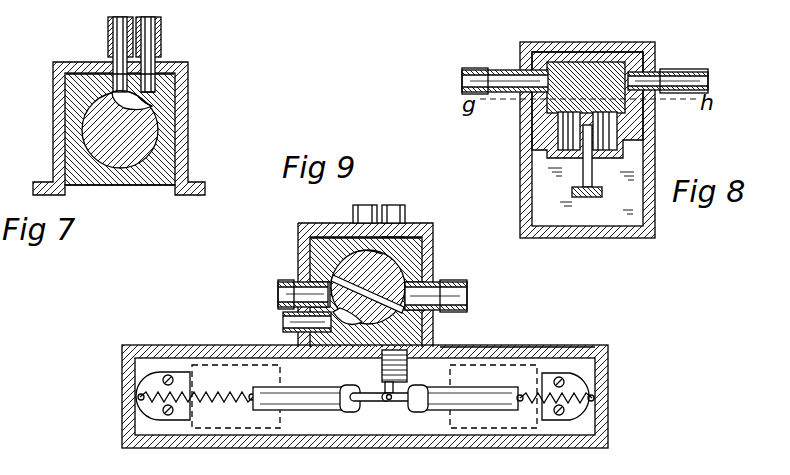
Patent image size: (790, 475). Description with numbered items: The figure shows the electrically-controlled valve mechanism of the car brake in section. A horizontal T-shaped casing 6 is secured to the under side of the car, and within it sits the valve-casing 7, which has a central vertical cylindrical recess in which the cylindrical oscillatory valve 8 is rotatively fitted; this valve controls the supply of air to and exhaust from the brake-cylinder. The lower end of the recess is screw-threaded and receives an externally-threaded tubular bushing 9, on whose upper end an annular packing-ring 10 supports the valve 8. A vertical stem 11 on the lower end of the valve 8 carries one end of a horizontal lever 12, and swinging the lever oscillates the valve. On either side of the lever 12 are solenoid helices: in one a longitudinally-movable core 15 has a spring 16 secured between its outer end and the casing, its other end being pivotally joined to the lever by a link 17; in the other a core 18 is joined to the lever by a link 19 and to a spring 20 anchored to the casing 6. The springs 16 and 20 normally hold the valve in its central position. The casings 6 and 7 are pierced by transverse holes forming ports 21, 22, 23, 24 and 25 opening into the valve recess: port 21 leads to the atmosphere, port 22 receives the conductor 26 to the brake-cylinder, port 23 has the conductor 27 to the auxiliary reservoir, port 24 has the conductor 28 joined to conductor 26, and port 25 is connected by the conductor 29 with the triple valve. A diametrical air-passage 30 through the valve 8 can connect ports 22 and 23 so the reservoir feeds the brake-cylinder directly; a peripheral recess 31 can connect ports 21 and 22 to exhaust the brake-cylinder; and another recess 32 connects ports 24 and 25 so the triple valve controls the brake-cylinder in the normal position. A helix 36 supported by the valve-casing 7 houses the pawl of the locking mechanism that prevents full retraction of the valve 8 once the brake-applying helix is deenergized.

In FIG. 7, the casing 6 is at (53, 72).
In FIG. 8, the casing 6 is at (652, 140).
In FIG. 9, the casing 6 is at (592, 347).
In FIG. 7, the valve-casing 7 is at (68, 100).
In FIG. 9, the valve-casing 7 is at (433, 250).
In FIG. 7, the cylindrical oscillatory valve 8 is at (88, 136).
In FIG. 8, the cylindrical oscillatory valve 8 is at (648, 56).
In FIG. 9, the cylindrical oscillatory valve 8 is at (425, 270).
In FIG. 8, the tubular bushing 9 is at (566, 132).
In FIG. 8, the annular packing-ring 10 is at (556, 118).
In FIG. 8, the vertical stem 11 is at (592, 170).
In FIG. 8, the horizontal lever 12 is at (574, 195).
In FIG. 9, the horizontal lever 12 is at (381, 365).
In FIG. 9, the core 15 is at (306, 384).
In FIG. 9, the spring 16 is at (236, 408).
In FIG. 9, the link 17 is at (372, 403).
In FIG. 9, the core 18 is at (448, 392).
In FIG. 9, the link 19 is at (404, 403).
In FIG. 9, the spring 20 is at (580, 416).
In FIG. 9, the port 21 is at (300, 335).
In FIG. 8, the port 22 is at (560, 66).
In FIG. 8, the port 23 is at (680, 74).
In FIG. 9, the port 23 is at (312, 265).
In FIG. 7, the port 24 is at (88, 80).
In FIG. 9, the port 24 is at (344, 240).
In FIG. 7, the port 25 is at (150, 96).
In FIG. 9, the port 25 is at (405, 240).
In FIG. 8, the conductor 26 is at (462, 80).
In FIG. 9, the conductor 26 is at (278, 294).
In FIG. 8, the conductor 27 is at (700, 82).
In FIG. 9, the conductor 27 is at (460, 296).
In FIG. 7, the conductor 28 is at (112, 27).
In FIG. 9, the conductor 28 is at (367, 200).
In FIG. 7, the conductor 29 is at (157, 27).
In FIG. 9, the conductor 29 is at (400, 202).
In FIG. 9, the air-passage 30 is at (400, 278).
In FIG. 9, the recess 31 is at (340, 325).
In FIG. 7, the recess 32 is at (132, 100).
In FIG. 9, the recess 32 is at (312, 250).
In FIG. 9, the helix 36 is at (478, 347).